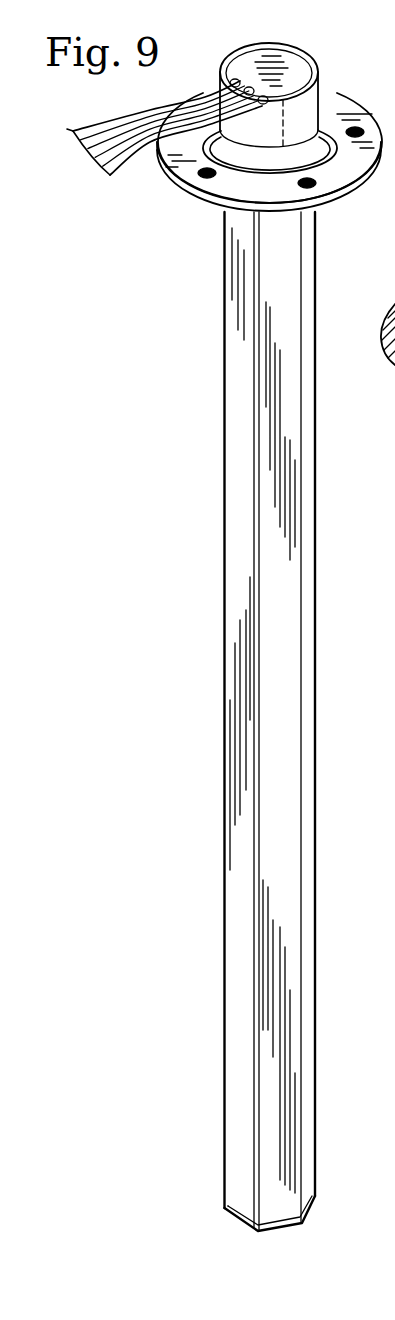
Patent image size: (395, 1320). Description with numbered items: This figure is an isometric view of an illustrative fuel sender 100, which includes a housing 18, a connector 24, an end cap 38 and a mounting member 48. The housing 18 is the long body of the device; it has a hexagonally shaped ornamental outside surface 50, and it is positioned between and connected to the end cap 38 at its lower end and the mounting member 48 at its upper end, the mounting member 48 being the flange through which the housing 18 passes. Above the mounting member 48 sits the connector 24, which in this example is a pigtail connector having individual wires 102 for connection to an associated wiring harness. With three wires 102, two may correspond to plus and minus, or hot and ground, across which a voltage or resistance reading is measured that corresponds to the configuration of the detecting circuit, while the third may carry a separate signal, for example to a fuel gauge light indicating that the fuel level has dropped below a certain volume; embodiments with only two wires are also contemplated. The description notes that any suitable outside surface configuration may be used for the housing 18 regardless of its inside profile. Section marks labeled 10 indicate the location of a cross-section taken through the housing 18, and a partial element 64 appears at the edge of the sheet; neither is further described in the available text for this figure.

The fuel sender 100 is at (281, 17).
The level sensor 10 is at (340, 24).
The connector 24 is at (261, 37).
The mounting member 48 is at (341, 91).
The individual wires 102 is at (107, 160).
The housing 18 is at (324, 893).
The hexagonally shaped ornamental outside surface 50 is at (222, 923).
The end cap 38 is at (234, 1219).
The adjacent element 64 is at (394, 280).